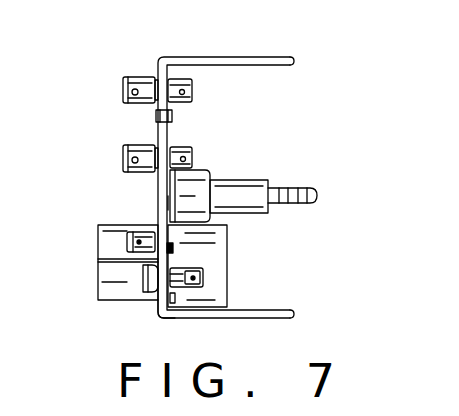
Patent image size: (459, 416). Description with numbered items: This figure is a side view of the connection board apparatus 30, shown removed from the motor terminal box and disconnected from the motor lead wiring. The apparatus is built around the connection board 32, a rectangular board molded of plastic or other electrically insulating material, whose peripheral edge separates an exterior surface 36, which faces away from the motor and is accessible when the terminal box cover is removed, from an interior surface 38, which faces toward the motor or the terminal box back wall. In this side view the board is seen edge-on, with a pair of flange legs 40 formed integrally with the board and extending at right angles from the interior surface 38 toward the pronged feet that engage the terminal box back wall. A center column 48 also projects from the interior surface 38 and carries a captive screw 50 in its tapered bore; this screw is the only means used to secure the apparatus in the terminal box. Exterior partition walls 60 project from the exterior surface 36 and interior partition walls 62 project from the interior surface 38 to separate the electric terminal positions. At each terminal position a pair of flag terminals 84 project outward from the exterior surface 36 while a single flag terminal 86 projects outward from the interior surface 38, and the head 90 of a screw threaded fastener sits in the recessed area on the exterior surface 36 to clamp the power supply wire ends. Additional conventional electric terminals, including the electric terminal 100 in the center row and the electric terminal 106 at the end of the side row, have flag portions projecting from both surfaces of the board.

The connection board apparatus 30 is at (88, 121).
The connection board 32 is at (158, 310).
The exterior surface 36 is at (155, 192).
The interior surface 38 is at (172, 202).
The flange legs 40 is at (255, 57).
The center column 48 is at (243, 192).
The screw 50 is at (300, 188).
The exterior partition walls 60 is at (110, 278).
The interior partition walls 62 is at (212, 255).
The flag terminals 84 is at (118, 240).
The single flag terminal 86 is at (210, 280).
The head 90 is at (148, 290).
The electric terminal 100 is at (153, 157).
The electric terminal 106 is at (123, 80).